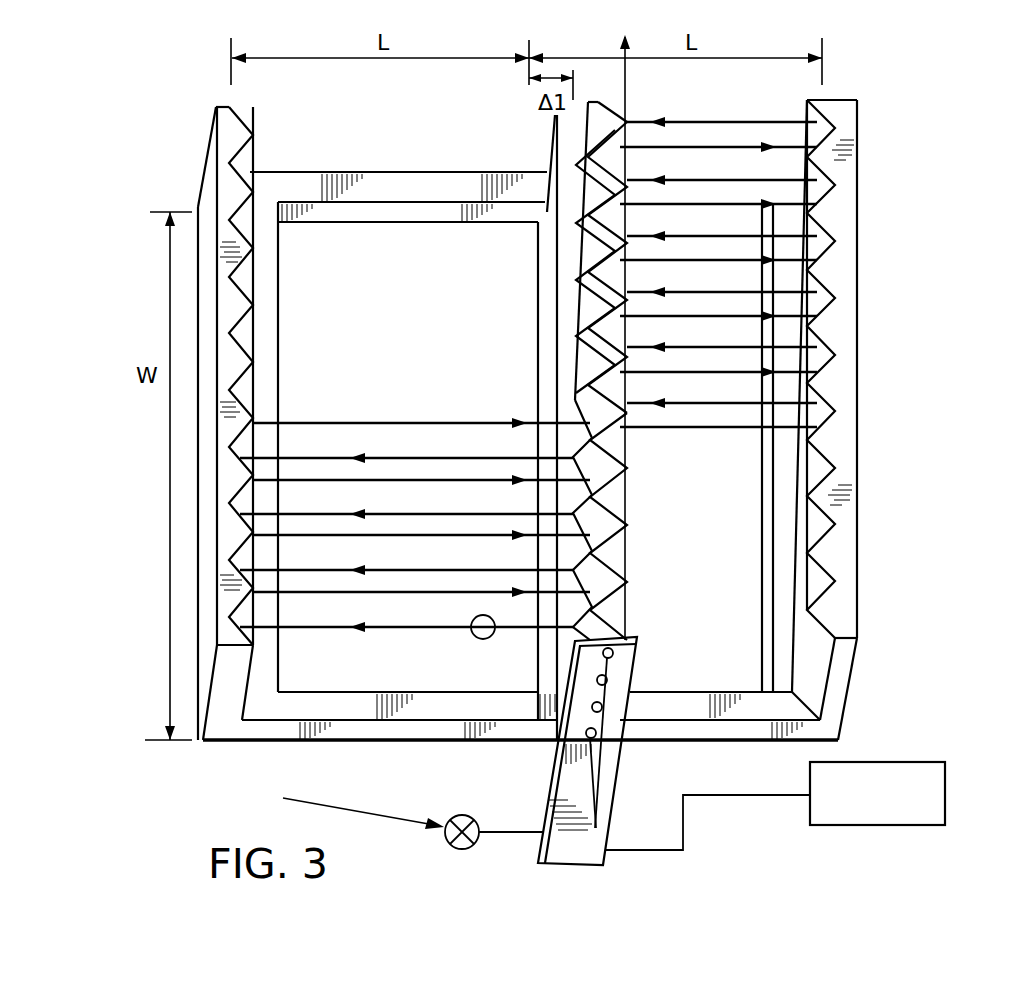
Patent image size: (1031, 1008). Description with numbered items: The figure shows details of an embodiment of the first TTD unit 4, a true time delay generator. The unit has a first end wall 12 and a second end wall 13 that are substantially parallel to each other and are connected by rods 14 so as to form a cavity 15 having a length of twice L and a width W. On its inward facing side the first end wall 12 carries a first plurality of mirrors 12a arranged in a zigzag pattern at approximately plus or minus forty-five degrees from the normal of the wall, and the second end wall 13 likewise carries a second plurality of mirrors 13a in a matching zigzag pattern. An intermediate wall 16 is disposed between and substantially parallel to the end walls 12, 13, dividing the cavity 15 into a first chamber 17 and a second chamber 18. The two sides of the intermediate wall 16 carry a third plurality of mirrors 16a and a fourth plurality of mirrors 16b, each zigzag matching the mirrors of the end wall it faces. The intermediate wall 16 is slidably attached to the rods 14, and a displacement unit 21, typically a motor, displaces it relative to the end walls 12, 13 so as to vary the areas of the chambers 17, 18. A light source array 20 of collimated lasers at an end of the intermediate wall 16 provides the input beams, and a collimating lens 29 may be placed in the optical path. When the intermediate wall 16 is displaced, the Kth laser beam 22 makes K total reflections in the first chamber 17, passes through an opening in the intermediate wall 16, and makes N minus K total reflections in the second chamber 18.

The first TTD unit 4 is at (870, 83).
The first end wall 12 is at (214, 110).
The first plurality of mirrors 12a is at (247, 157).
The second end wall 13 is at (857, 142).
The second plurality of mirrors 13a is at (808, 597).
The rods 14 is at (428, 172).
The cavity 15 is at (740, 463).
The intermediate wall 16 is at (540, 768).
The third plurality of mirrors 16a is at (590, 450).
The fourth plurality of mirrors 16b is at (618, 487).
The first chamber 17 is at (416, 310).
The second chamber 18 is at (746, 533).
The light source array 20 is at (637, 678).
The displacement unit 21 is at (945, 780).
The Kth laser beam 22 is at (612, 745).
The collimating lens 29 is at (487, 640).